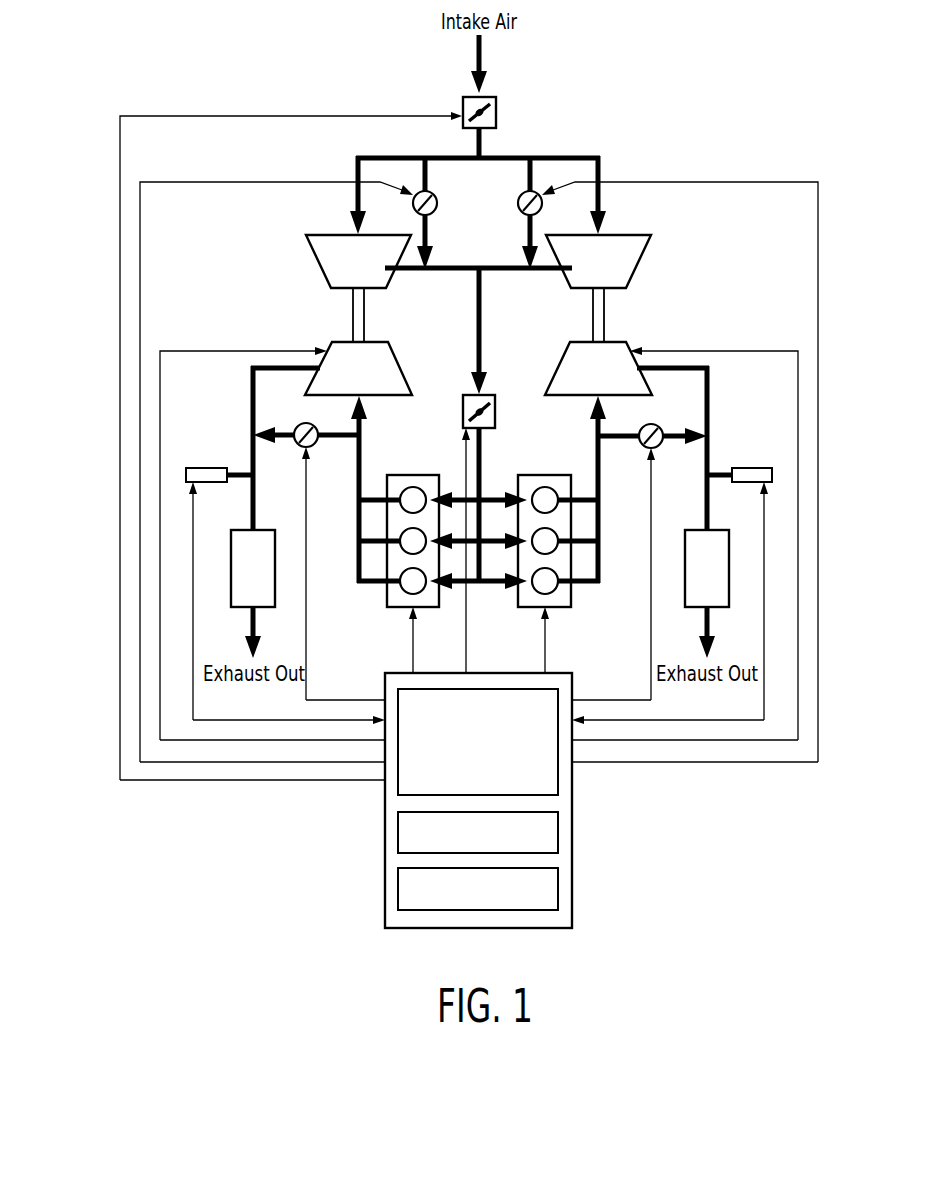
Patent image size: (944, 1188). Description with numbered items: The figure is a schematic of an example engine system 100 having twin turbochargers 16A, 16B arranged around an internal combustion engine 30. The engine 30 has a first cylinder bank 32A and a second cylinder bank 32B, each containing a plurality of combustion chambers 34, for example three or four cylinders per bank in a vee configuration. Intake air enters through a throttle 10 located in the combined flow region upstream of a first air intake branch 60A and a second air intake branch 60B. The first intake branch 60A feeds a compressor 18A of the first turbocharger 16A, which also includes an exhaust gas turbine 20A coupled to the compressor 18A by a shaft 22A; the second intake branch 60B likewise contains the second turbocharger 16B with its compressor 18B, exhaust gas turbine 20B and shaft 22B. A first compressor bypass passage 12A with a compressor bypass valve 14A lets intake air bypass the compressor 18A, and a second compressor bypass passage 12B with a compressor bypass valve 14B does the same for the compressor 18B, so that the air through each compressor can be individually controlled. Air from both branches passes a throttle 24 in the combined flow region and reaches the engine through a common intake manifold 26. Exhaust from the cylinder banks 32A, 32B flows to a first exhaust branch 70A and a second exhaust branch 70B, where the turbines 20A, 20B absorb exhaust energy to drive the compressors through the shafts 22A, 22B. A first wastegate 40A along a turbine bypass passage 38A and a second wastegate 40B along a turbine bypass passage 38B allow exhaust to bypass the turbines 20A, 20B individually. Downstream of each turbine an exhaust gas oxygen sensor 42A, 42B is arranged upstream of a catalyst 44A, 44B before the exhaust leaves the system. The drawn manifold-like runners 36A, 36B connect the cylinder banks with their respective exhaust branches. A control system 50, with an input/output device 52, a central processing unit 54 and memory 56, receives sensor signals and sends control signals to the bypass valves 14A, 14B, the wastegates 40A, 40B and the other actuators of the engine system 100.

The engine system 100 is at (66, 141).
The throttle 10 is at (496, 111).
The first air intake branch 60A is at (518, 133).
The second air intake branch 60B is at (449, 158).
The first compressor bypass passage 12A is at (524, 163).
The second compressor bypass passage 12B is at (431, 163).
The compressor bypass valve 14A is at (522, 214).
The compressor bypass valve 14B is at (433, 214).
The first turbocharger 16A is at (673, 297).
The second turbocharger 16B is at (284, 297).
The compressor 18A is at (645, 253).
The compressor 18B is at (312, 253).
The exhaust gas turbine 20A is at (558, 368).
The exhaust gas turbine 20B is at (400, 368).
The shaft 22A is at (606, 298).
The shaft 22B is at (352, 298).
The throttle 24 is at (497, 423).
The common intake manifold 26 is at (483, 470).
The internal combustion engine 30 is at (382, 658).
The first cylinder bank 32A is at (572, 588).
The second cylinder bank 32B is at (386, 588).
The combustion chamber 34 is at (550, 487).
The exhaust manifold 36A is at (600, 560).
The exhaust manifold 36B is at (357, 562).
The turbine bypass passage 38A is at (628, 440).
The turbine bypass passage 38B is at (329, 439).
The first wastegate 40A is at (657, 425).
The second wastegate 40B is at (300, 425).
The exhaust gas oxygen sensor 42A is at (757, 467).
The exhaust gas oxygen sensor 42B is at (200, 467).
The catalyst 44A is at (729, 594).
The catalyst 44B is at (231, 598).
The first exhaust branch 70A is at (704, 491).
The second exhaust branch 70B is at (283, 503).
The control system 50 is at (479, 814).
The input/output device 52 is at (478, 742).
The central processing unit 54 is at (478, 832).
The memory 56 is at (478, 889).